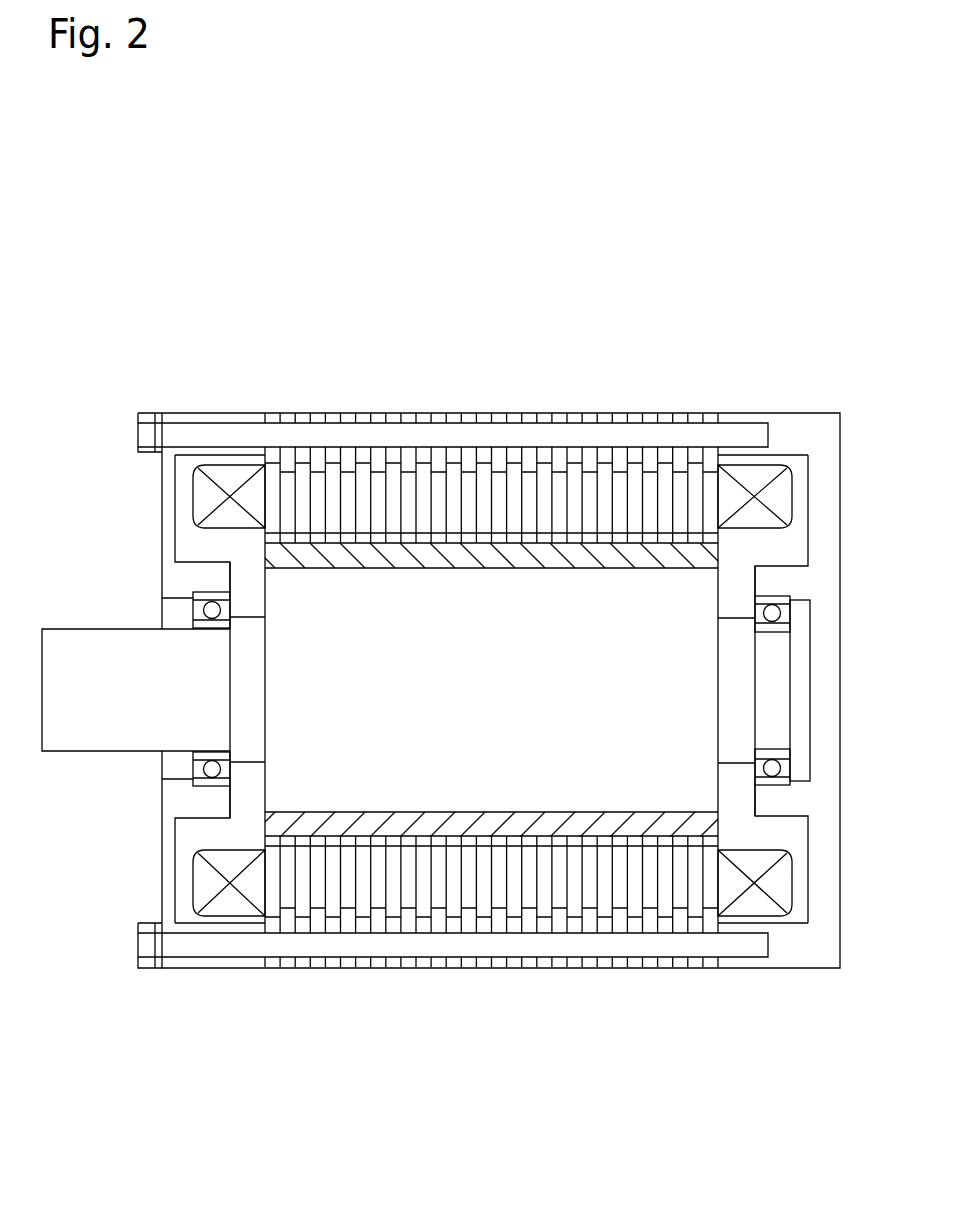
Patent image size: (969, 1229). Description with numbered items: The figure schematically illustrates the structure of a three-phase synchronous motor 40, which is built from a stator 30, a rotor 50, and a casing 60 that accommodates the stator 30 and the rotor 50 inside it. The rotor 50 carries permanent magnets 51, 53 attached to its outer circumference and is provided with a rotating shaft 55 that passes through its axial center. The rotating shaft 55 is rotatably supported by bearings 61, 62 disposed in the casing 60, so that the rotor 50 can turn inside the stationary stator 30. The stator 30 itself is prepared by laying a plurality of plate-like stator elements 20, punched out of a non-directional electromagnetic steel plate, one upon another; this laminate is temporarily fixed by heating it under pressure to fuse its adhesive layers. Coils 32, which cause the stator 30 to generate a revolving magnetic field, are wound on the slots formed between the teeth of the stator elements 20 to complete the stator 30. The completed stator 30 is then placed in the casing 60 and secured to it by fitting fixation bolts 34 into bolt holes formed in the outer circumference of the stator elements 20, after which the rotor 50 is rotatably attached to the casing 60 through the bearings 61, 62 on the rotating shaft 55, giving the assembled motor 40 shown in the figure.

The stator element 20 is at (557, 465).
The stator 30 is at (491, 425).
The coil 32 is at (782, 505).
The fixation bolt 34 is at (204, 432).
The three-phase synchronous motor 40 is at (617, 991).
The rotor 50 is at (568, 679).
The permanent magnet 51 is at (703, 557).
The permanent magnet 53 is at (702, 827).
The rotating shaft 55 is at (120, 719).
The casing 60 is at (801, 433).
The bearing 61 is at (205, 603).
The bearing 62 is at (783, 598).